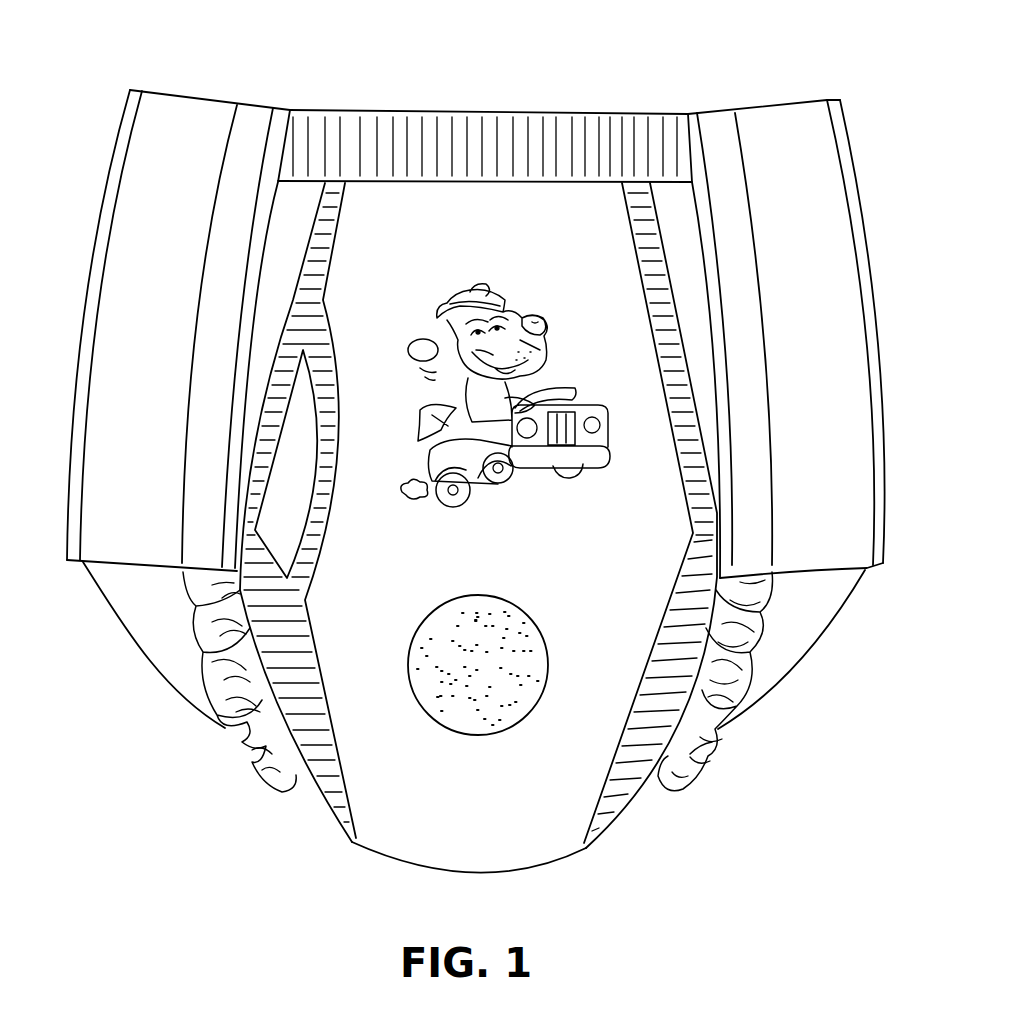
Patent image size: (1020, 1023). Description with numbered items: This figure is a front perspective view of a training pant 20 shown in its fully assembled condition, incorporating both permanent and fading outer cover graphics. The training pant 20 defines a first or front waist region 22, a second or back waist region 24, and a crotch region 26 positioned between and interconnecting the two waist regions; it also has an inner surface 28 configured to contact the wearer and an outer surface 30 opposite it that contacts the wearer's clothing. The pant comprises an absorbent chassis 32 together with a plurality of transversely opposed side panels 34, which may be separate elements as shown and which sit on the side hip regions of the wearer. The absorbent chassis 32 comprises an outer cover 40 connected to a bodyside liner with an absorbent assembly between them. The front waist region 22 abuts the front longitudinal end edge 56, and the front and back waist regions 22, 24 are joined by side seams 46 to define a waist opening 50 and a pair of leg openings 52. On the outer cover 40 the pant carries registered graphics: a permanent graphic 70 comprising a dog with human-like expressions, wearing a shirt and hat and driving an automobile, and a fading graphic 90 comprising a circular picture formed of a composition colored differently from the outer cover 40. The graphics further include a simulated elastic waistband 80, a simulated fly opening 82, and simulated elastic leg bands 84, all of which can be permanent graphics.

The training pant 20 is at (105, 121).
The first or front waist region 22 is at (838, 215).
The second or back waist region 24 is at (837, 632).
The crotch region 26 is at (313, 845).
The inner surface 28 is at (142, 606).
The outer surface 30 is at (288, 205).
The absorbent chassis 32 is at (700, 748).
The side panels 34 is at (161, 328).
The outer cover 40 is at (606, 227).
The side seams 46 is at (77, 350).
The waist opening 50 is at (373, 90).
The leg openings 52 is at (180, 716).
The first or front longitudinal end edge 56 is at (540, 108).
The permanent graphic 70 is at (456, 390).
The simulated elastic waistband 80 is at (640, 146).
The simulated fly opening 82 is at (265, 387).
The simulated elastic leg bands 84 is at (628, 795).
The fading graphic 90 is at (410, 638).